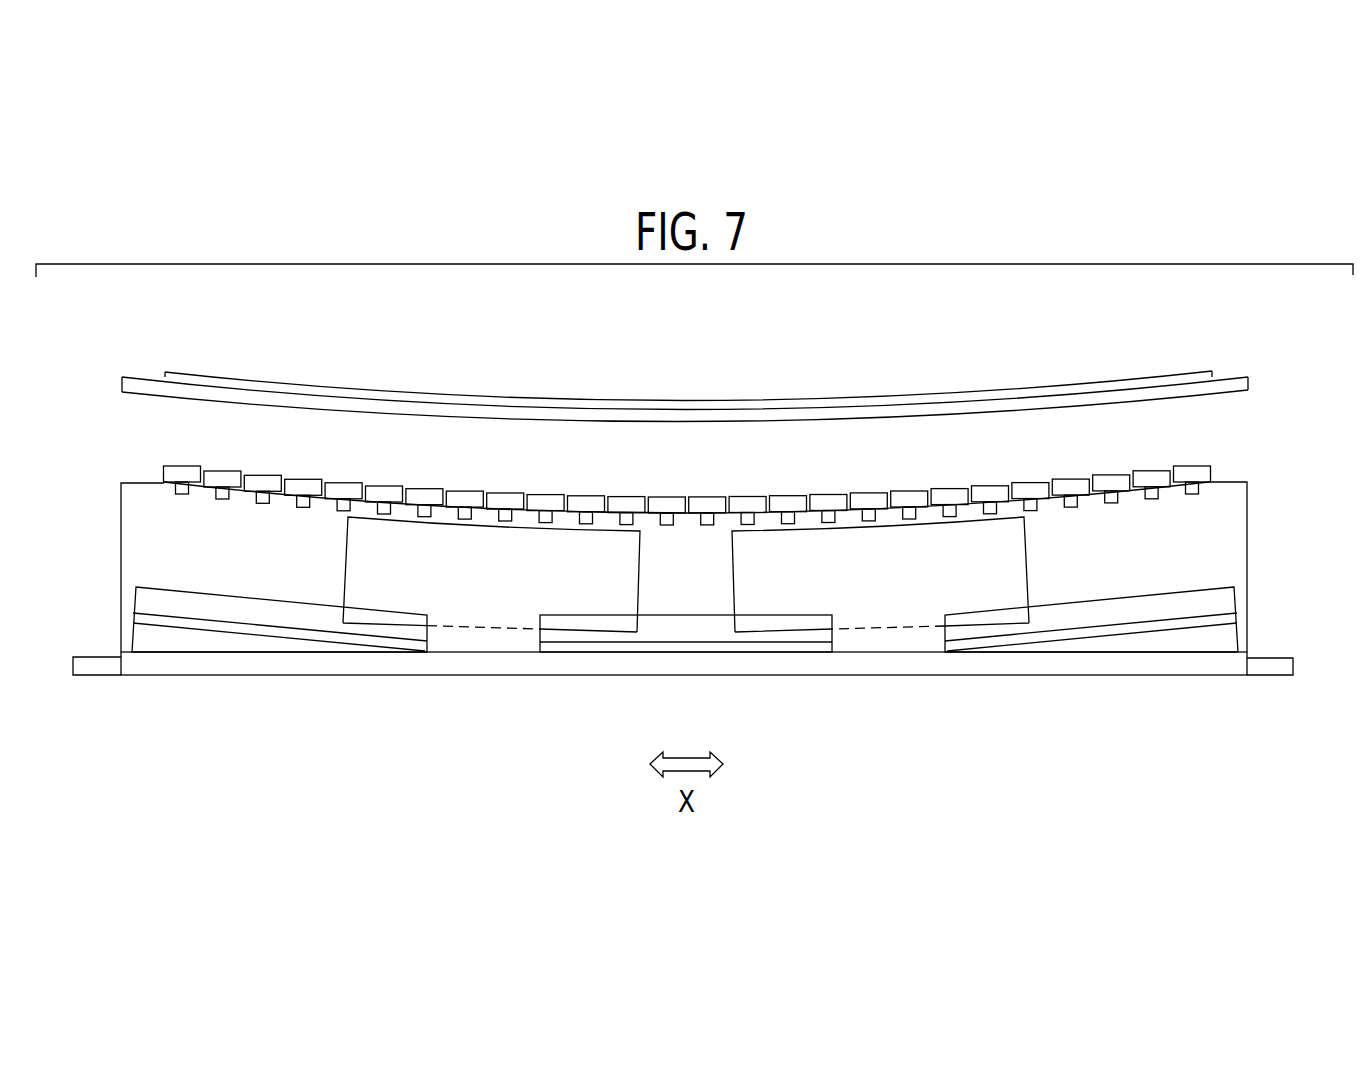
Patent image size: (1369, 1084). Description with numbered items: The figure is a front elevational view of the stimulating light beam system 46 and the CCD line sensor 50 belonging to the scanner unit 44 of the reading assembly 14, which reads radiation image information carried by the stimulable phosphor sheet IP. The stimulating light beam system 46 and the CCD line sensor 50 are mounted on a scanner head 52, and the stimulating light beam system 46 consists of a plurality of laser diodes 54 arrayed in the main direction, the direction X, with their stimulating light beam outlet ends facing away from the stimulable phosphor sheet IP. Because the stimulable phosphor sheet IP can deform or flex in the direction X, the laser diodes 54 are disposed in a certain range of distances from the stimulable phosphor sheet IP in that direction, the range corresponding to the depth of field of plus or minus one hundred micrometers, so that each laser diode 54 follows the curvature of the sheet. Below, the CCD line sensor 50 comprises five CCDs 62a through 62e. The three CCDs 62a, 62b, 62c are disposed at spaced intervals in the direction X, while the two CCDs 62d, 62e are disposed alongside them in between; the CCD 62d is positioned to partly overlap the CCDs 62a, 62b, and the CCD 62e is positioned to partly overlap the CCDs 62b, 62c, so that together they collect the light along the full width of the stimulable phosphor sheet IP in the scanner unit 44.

The reading assembly 14 is at (1050, 322).
The stimulable phosphor sheet IP is at (465, 408).
The scanner unit 44 is at (698, 586).
The stimulating light beam system 46 is at (687, 470).
The CCD line sensor 50 is at (995, 692).
The scanner head 52 is at (714, 615).
The laser diode 54 is at (867, 500).
The CCD 62a is at (233, 619).
The CCD 62b is at (657, 637).
The CCD 62c is at (1048, 618).
The CCD 62d is at (460, 606).
The CCD 62e is at (912, 606).